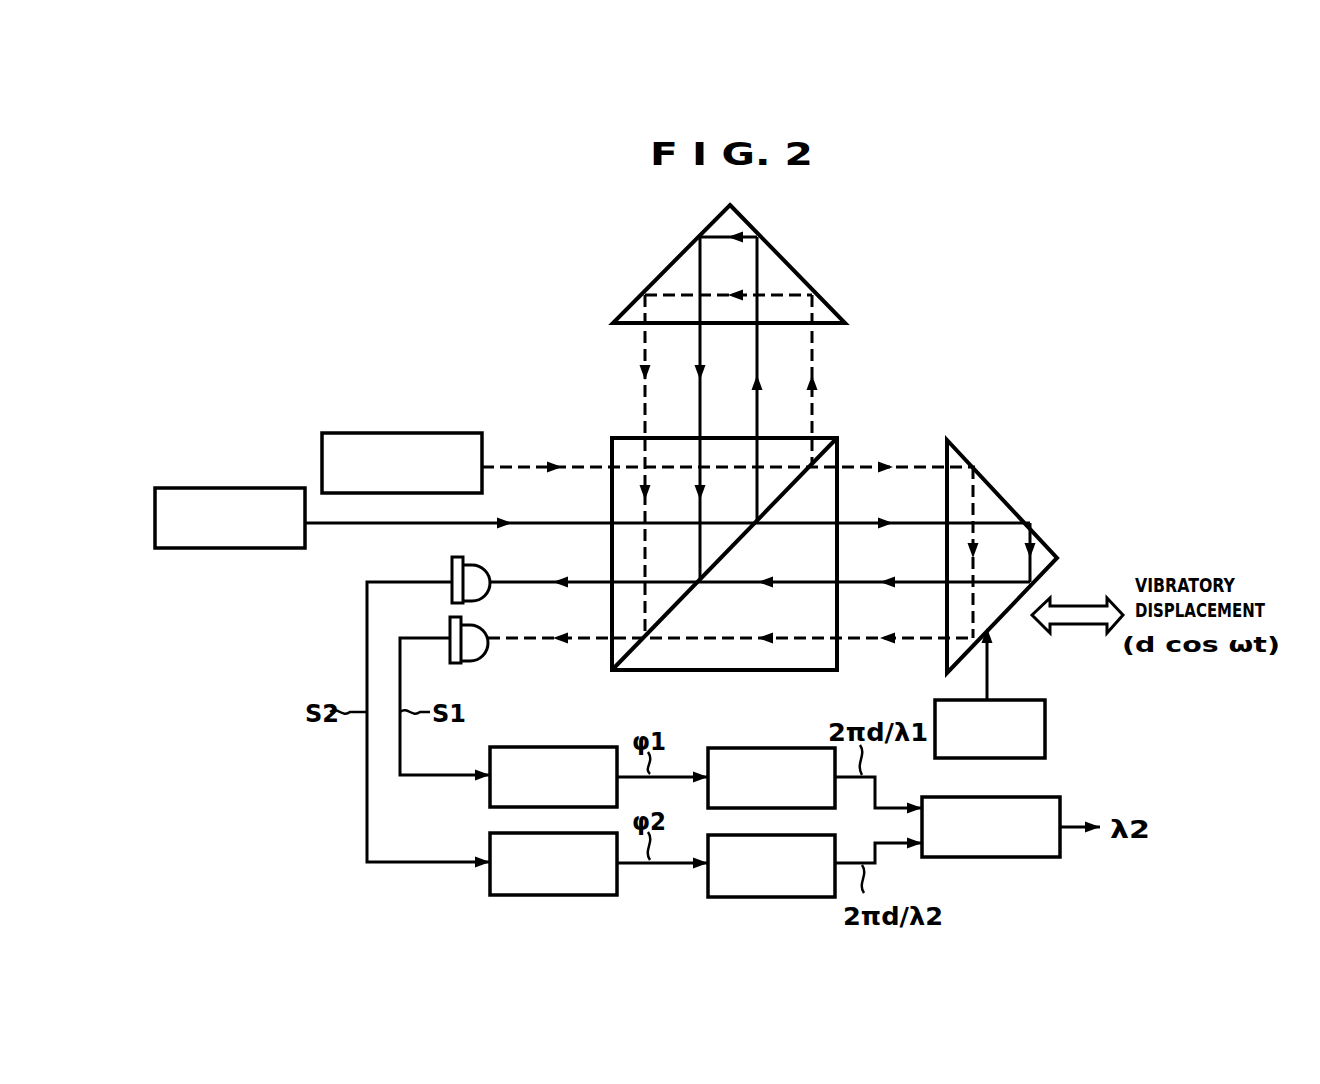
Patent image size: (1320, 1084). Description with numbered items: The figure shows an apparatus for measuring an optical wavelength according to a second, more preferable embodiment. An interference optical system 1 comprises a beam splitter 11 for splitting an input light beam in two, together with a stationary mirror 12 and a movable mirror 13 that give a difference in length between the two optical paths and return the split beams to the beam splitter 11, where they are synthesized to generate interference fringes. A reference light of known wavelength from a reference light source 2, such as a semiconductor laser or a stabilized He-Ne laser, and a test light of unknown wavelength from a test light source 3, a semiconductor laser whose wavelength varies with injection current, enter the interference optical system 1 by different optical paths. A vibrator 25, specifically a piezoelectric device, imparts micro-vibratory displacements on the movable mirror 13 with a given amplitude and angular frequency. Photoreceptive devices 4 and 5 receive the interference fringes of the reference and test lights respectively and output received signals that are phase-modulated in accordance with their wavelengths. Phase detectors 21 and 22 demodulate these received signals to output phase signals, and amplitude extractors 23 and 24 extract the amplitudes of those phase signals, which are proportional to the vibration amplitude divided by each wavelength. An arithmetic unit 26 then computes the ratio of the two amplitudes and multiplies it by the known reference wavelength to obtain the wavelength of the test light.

The interference optical system 1 is at (899, 354).
The reference light source 2 is at (425, 432).
The test light source 3 is at (246, 487).
The photoreceptive device 4 is at (478, 661).
The photoreceptive device 5 is at (480, 562).
The beam splitter 11 is at (622, 436).
The mirror 12 is at (784, 267).
The mirror 13 is at (998, 492).
The phase detector 21 is at (568, 746).
The phase detector 22 is at (560, 897).
The amplitude extractor 23 is at (752, 747).
The amplitude extractor 24 is at (765, 899).
The vibrator 25 is at (1045, 730).
The arithmetic unit 26 is at (1017, 859).